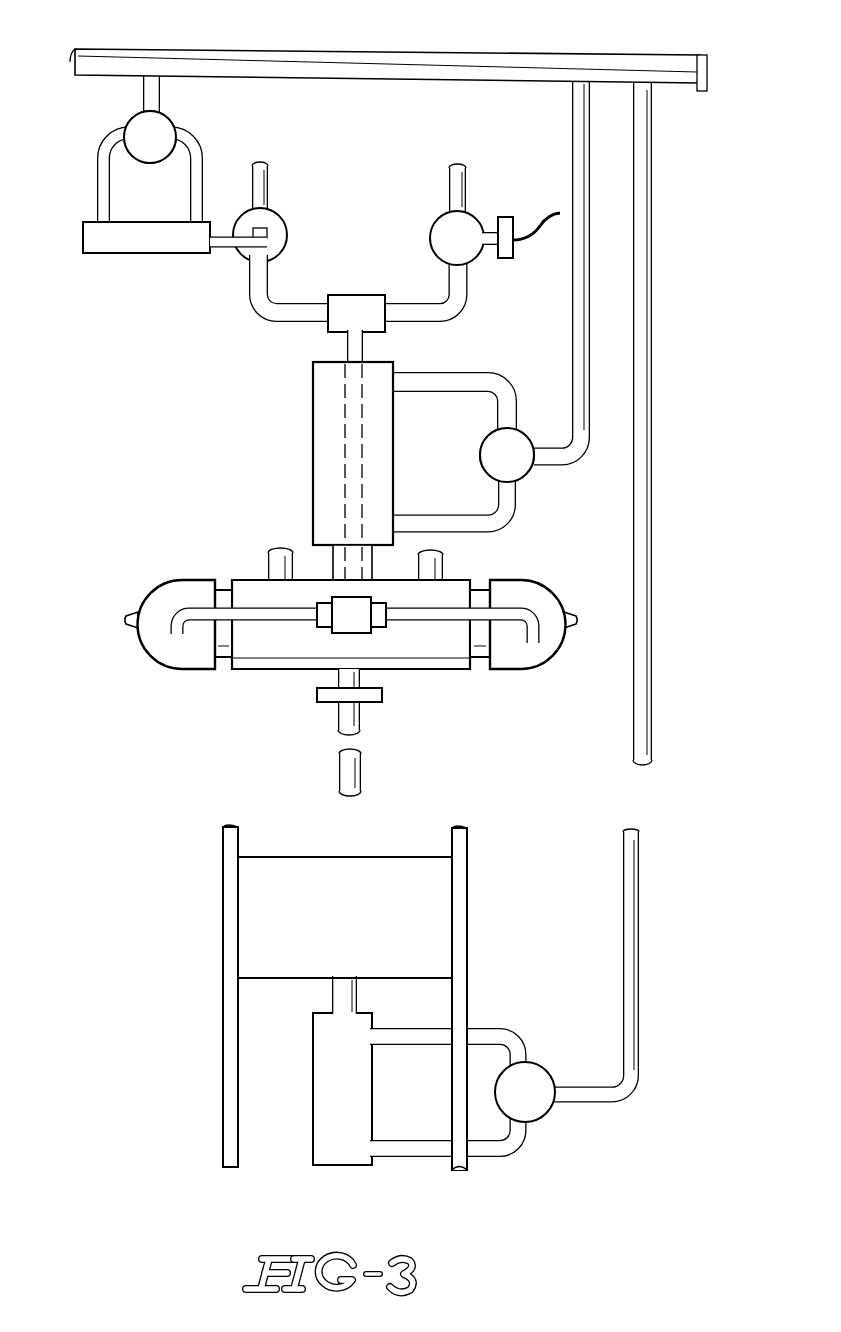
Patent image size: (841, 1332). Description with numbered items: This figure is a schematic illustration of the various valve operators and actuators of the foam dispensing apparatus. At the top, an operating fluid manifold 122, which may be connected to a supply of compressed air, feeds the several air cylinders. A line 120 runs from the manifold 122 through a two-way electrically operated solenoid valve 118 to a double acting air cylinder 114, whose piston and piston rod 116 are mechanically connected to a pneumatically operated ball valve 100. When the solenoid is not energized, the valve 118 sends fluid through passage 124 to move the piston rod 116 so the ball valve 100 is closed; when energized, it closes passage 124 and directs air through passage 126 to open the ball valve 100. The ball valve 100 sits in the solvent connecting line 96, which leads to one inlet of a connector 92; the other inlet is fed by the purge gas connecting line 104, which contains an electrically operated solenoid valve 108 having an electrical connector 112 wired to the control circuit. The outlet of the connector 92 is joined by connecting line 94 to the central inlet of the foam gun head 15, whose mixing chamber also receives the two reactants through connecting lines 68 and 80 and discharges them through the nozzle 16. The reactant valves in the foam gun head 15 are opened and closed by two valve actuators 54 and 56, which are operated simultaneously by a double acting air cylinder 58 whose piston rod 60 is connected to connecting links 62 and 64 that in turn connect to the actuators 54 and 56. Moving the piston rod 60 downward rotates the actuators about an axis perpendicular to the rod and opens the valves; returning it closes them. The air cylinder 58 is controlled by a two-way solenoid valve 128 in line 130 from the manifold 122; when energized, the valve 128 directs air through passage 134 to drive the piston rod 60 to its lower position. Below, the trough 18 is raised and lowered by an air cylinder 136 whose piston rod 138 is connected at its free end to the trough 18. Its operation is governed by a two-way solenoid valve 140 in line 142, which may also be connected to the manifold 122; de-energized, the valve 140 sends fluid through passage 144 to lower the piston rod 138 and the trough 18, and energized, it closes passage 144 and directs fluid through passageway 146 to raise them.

The foam gun head 15 is at (296, 673).
The nozzle 16 is at (363, 762).
The trough 18 is at (362, 915).
The valve actuator 54 is at (150, 632).
The valve actuator 56 is at (519, 668).
The double acting air cylinder 58 is at (313, 420).
The piston rod 60 is at (362, 592).
The connecting link 62 is at (249, 614).
The connecting link 64 is at (440, 617).
The connecting line 68 is at (273, 562).
The connecting line 80 is at (446, 565).
The connector 92 is at (360, 300).
The connecting line 94 is at (365, 424).
The connecting line 96 is at (246, 298).
The ball valve 100 is at (282, 230).
The connecting line 104 is at (468, 180).
The solenoid valve 108 is at (468, 251).
The electrical connector 112 is at (540, 220).
The double acting air cylinder 114 is at (103, 243).
The piston rod 116 is at (222, 248).
The solenoid valve 118 is at (172, 128).
The line 120 is at (143, 97).
The manifold 122 is at (445, 52).
The passage 124 is at (200, 162).
The passage 126 is at (97, 171).
The solenoid valve 128 is at (540, 468).
The line 130 is at (590, 293).
The passage 134 is at (506, 392).
The air cylinder 136 is at (314, 1132).
The piston rod 138 is at (357, 993).
The solenoid valve 140 is at (535, 1105).
The line 142 is at (635, 963).
The passage 144 is at (512, 1040).
The passageway 146 is at (490, 1152).